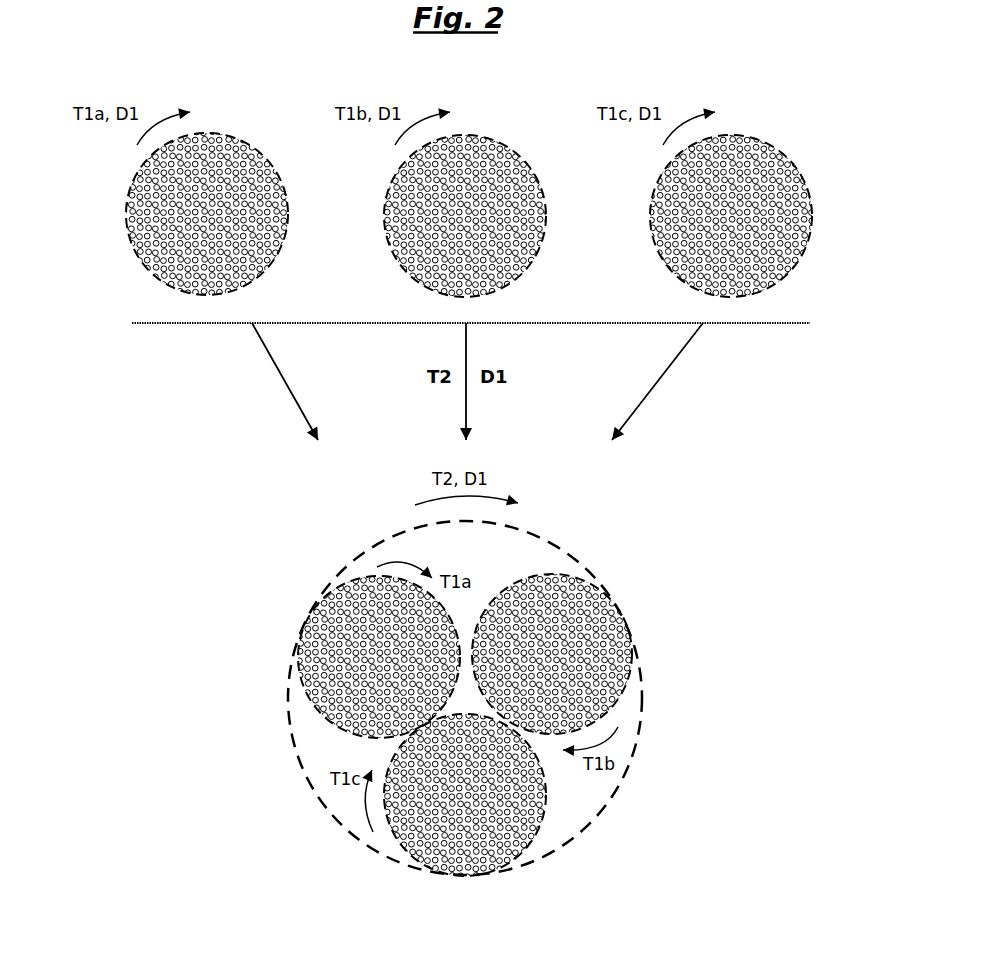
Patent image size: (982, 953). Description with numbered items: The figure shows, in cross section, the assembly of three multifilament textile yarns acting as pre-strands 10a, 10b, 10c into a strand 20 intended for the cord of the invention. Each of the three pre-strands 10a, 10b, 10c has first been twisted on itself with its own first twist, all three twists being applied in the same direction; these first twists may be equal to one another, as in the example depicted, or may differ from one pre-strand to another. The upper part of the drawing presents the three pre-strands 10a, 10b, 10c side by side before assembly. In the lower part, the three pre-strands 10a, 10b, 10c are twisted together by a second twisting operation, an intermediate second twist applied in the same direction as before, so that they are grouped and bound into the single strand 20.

The pre-strand 10a is at (128, 193).
The pre-strand 10b is at (543, 198).
The pre-strand 10c is at (802, 180).
The strand 20 is at (582, 560).